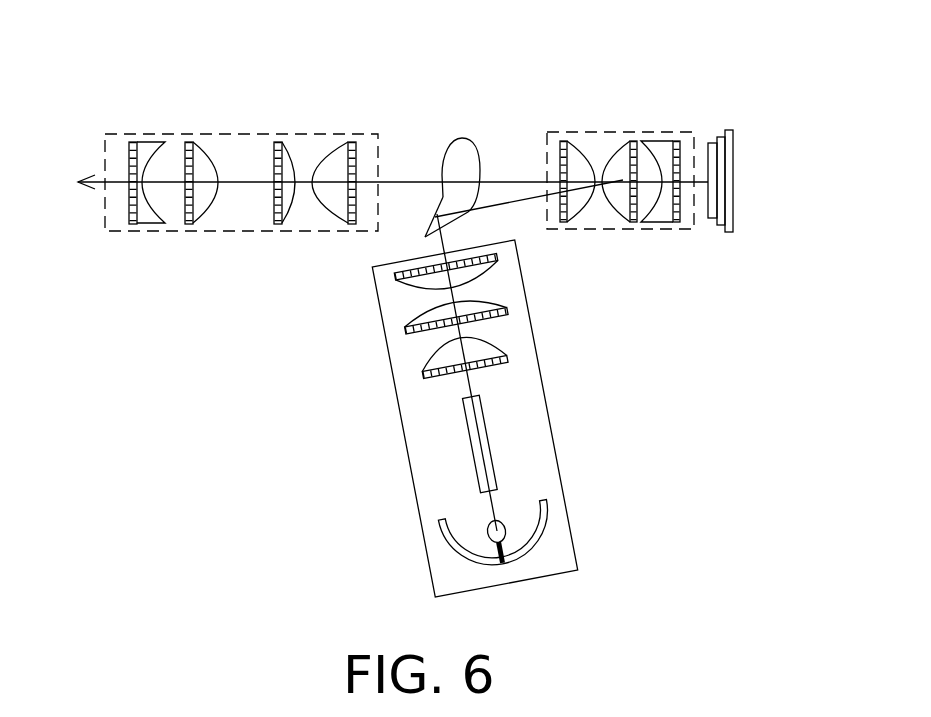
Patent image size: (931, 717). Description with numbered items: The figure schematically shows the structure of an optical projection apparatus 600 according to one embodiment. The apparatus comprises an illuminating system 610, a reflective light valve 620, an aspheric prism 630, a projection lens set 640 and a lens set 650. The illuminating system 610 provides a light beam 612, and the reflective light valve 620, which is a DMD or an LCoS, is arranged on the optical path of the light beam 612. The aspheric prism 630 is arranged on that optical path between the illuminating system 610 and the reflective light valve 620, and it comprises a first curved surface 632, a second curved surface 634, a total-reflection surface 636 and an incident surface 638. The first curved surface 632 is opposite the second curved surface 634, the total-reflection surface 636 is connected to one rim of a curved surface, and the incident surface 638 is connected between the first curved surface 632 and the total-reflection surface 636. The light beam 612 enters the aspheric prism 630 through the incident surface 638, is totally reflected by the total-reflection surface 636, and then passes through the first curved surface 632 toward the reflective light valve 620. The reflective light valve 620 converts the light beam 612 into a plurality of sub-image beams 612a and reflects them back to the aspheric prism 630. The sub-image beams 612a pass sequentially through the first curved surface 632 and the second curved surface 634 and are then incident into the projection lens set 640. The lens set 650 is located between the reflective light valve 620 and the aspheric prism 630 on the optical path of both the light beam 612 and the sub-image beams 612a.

The optical projection apparatus 600 is at (664, 600).
The illuminating system 610 is at (393, 381).
The light beam 612 is at (533, 197).
The sub-image beams 612a is at (507, 182).
The reflective light valve 620 is at (733, 181).
The aspheric prism 630 is at (414, 162).
The first curved surface 632 is at (477, 145).
The second curved surface 634 is at (441, 172).
The total-reflection surface 636 is at (430, 223).
The incident surface 638 is at (450, 227).
The projection lens set 640 is at (226, 134).
The lens set 650 is at (645, 132).